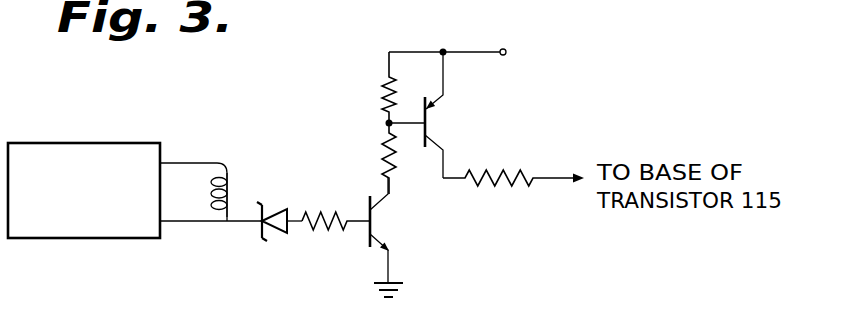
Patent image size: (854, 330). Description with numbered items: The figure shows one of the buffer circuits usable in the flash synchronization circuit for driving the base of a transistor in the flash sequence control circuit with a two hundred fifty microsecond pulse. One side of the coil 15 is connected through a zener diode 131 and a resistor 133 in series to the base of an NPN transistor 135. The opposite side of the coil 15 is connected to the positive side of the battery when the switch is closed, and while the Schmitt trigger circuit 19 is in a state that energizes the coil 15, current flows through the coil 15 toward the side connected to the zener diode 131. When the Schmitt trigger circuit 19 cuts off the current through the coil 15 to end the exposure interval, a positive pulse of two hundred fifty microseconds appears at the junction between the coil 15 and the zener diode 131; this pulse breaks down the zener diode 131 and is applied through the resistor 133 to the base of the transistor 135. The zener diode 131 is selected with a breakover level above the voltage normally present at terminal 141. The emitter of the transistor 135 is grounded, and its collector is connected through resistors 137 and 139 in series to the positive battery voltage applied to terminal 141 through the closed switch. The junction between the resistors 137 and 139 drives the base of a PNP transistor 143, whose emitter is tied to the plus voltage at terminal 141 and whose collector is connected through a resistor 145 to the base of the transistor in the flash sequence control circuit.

The Schmitt trigger circuit 19 is at (98, 143).
The coil 15 is at (231, 175).
The zener diode 131 is at (267, 240).
The resistor 133 is at (327, 211).
The NPN transistor 135 is at (369, 239).
The resistor 137 is at (394, 172).
The resistor 139 is at (387, 88).
The terminal 141 is at (507, 55).
The PNP transistor 143 is at (430, 112).
The resistor 145 is at (496, 187).